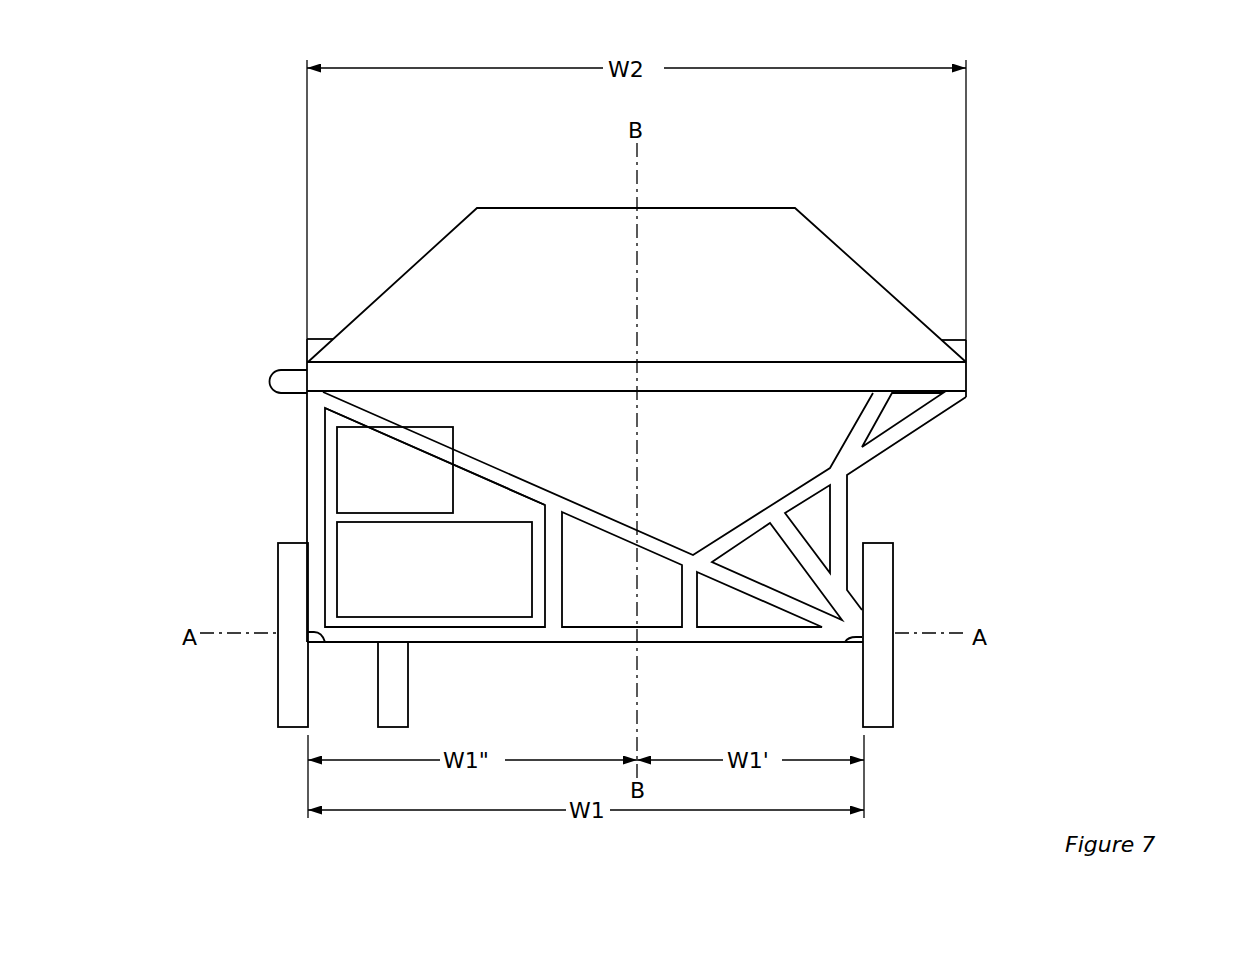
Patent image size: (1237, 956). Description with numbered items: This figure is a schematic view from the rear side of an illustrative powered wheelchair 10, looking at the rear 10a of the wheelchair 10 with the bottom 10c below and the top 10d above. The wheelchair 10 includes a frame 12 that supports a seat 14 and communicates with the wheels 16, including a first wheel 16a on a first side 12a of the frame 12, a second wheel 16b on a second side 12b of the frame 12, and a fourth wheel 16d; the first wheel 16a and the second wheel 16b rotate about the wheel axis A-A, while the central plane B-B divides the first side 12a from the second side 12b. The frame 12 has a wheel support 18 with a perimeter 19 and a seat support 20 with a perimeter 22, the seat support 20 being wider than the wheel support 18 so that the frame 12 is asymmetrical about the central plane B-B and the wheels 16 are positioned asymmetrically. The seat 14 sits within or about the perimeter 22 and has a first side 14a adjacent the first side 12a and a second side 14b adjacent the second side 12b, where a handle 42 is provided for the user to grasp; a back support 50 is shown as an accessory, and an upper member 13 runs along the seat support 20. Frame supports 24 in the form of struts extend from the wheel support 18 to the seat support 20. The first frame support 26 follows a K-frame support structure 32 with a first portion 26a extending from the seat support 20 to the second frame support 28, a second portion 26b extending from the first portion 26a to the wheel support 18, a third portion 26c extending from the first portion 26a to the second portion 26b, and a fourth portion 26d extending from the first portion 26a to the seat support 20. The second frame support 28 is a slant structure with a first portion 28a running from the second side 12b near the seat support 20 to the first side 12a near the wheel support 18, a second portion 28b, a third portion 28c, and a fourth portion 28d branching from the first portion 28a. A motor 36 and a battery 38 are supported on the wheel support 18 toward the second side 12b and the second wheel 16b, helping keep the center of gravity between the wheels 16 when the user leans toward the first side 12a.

The wheelchair 10 is at (1110, 68).
The rear of the wheelchair 10a is at (210, 509).
The bottom of the wheelchair 10c is at (701, 670).
The top of the wheelchair 10d is at (817, 148).
The frame 12 is at (306, 439).
The first side of the frame 12a is at (711, 393).
The second side of the frame 12b is at (554, 393).
The top rail 13 is at (968, 351).
The seat 14 is at (952, 343).
The first side of the seat 14a is at (962, 345).
The second side of the seat 14b is at (312, 350).
The wheels 16 is at (277, 685).
The first wheel 16a is at (895, 707).
The second wheel 16b is at (277, 573).
The fourth wheel 16d is at (397, 706).
The wheel support 18 is at (535, 643).
The perimeter of the wheel support 19 is at (310, 633).
The seat support 20 is at (609, 393).
The perimeter of the seat support 22 is at (968, 383).
The frame supports 24 is at (804, 448).
The first frame support 26 is at (907, 456).
The first portion of the first frame support 26a is at (812, 482).
The second portion of the first frame support 26b is at (797, 553).
The third portion of the first frame support 26c is at (848, 510).
The fourth portion of the first frame support 26d is at (866, 407).
The second frame support 28 is at (691, 525).
The first portion of the second frame support 28a is at (520, 472).
The second portion of the second frame support 28b is at (306, 484).
The third portion of the second frame support 28c is at (566, 532).
The fourth portion of the second frame support 28d is at (700, 618).
The K-frame support structure 32 is at (932, 434).
The motor 36 is at (507, 521).
The battery 38 is at (441, 426).
The handle 42 is at (276, 372).
The back support 50 is at (447, 232).